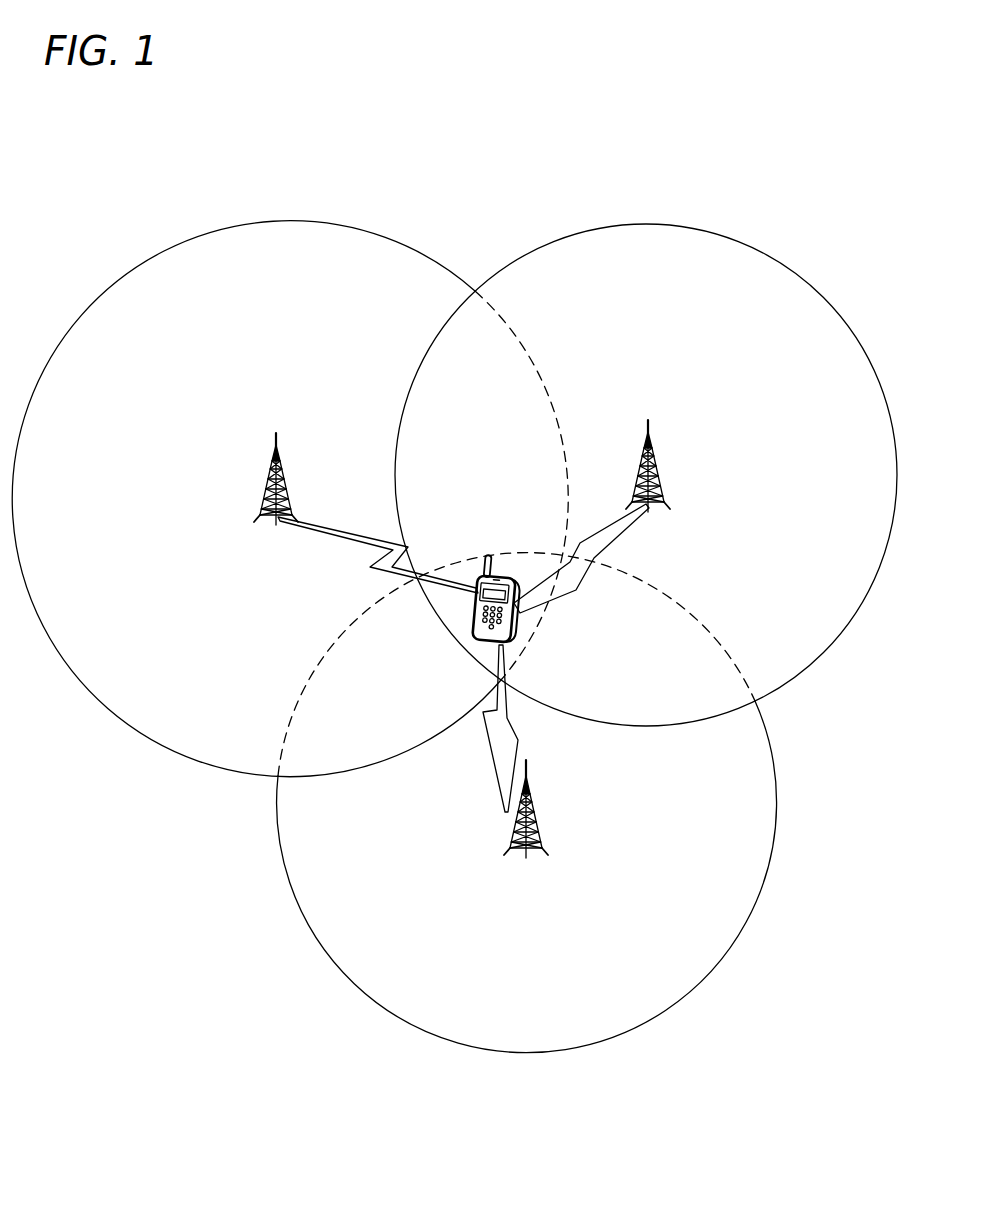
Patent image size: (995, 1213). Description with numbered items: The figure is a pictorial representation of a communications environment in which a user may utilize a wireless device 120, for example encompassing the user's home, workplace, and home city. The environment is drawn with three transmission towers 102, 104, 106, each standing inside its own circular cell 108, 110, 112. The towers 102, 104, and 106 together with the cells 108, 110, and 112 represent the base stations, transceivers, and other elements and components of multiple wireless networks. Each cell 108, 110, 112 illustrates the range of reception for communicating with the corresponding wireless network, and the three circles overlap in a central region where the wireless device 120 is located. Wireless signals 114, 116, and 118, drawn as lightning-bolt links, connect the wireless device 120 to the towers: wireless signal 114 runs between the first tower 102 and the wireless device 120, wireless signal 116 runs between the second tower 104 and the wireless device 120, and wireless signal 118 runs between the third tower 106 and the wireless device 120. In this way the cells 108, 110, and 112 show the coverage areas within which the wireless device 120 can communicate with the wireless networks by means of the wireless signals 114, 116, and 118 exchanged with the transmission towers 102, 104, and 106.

The transmission tower 102 is at (276, 493).
The transmission tower 104 is at (648, 480).
The transmission tower 106 is at (526, 819).
The cell 108 is at (225, 288).
The cell 110 is at (618, 238).
The cell 112 is at (702, 938).
The wireless signal 114 is at (372, 569).
The wireless signal 116 is at (622, 542).
The wireless signal 118 is at (519, 733).
The wireless device 120 is at (513, 628).